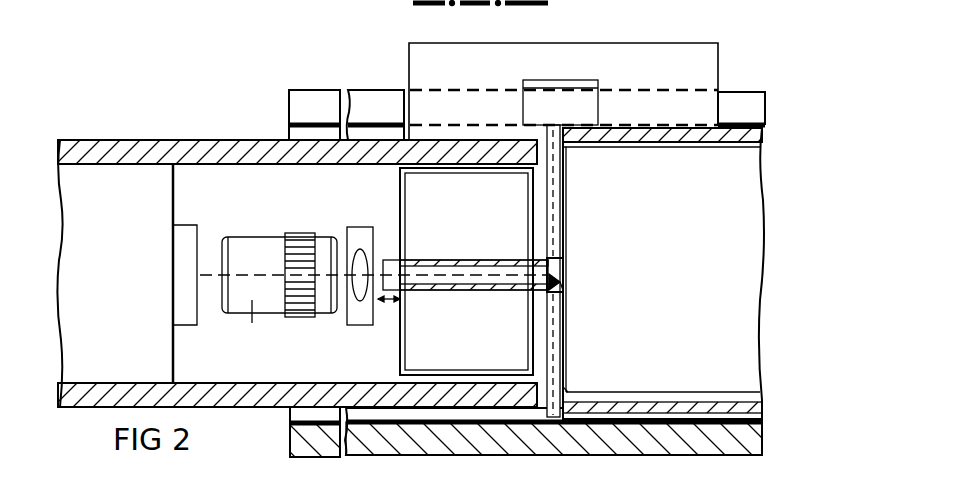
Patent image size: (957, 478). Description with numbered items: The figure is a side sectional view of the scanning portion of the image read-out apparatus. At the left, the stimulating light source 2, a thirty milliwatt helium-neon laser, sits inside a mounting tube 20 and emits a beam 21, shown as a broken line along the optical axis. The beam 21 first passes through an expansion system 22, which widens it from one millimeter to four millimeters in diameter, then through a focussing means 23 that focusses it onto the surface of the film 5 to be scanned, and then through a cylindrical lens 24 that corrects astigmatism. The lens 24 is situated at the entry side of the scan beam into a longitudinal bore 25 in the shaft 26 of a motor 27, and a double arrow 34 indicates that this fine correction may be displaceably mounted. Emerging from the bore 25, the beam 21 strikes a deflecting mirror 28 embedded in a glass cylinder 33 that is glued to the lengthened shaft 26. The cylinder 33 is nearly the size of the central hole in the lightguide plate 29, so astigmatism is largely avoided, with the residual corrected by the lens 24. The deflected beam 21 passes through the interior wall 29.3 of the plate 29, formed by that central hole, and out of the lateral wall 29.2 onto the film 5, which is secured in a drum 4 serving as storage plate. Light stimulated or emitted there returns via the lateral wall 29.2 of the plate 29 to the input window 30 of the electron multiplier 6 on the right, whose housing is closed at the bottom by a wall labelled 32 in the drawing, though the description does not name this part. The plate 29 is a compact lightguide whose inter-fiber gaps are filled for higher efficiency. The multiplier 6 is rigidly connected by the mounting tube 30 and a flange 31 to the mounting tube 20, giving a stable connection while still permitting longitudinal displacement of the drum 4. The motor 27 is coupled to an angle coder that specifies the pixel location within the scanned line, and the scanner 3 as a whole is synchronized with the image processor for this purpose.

The stimulating light source 2 is at (118, 197).
The mounting tube 20 is at (133, 150).
The scanner 3 is at (248, 187).
The beam 21 is at (213, 275).
The expansion system 22 is at (275, 245).
The focussing means 23 is at (361, 227).
The cylindrical lens 24 is at (373, 297).
The longitudinal bore 25 is at (474, 260).
The shaft 26 is at (434, 266).
The motor 27 is at (455, 216).
The double arrow 34 is at (388, 334).
The deflecting mirror 28 is at (564, 283).
The lightguide plate 29 is at (558, 332).
The lateral wall 29.2 is at (530, 128).
The interior wall 29.3 is at (585, 277).
The input window 30 is at (564, 212).
The flange 31 is at (638, 55).
The bottom wall of multiplier housing 32 is at (705, 400).
The glass cylinder 33 is at (561, 288).
The drum 4 is at (313, 105).
The film 5 is at (395, 122).
The electron multiplier 6 is at (664, 239).